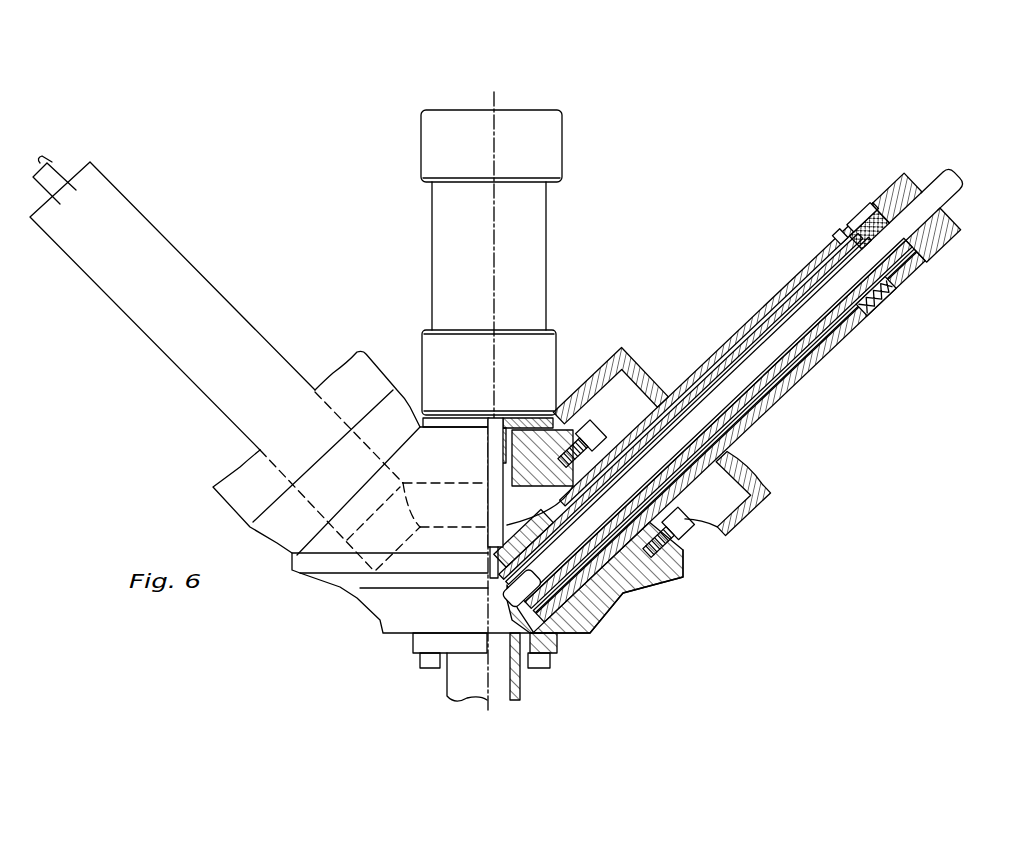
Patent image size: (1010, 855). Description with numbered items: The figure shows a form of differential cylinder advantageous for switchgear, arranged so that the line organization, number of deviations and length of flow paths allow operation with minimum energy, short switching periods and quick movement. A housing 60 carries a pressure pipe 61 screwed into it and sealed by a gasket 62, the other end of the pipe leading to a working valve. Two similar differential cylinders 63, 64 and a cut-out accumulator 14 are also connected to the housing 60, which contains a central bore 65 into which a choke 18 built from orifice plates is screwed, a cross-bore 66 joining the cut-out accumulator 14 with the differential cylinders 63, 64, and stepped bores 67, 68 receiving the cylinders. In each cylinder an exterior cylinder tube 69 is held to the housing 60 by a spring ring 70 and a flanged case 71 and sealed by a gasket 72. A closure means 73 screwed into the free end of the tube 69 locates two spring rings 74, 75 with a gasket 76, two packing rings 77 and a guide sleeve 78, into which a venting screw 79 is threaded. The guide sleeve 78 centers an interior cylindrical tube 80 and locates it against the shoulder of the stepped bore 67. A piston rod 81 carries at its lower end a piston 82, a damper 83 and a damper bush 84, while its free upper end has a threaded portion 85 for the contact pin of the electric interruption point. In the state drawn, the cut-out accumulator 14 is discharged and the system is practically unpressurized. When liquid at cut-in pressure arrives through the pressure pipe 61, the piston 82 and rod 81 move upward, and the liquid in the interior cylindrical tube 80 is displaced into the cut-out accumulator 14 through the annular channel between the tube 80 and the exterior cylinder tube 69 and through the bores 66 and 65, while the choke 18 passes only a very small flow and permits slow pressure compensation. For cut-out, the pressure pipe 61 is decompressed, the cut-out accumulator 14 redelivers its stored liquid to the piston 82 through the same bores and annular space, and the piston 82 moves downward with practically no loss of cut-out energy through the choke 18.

The cut-out accumulator 14 is at (433, 292).
The choke 18 is at (490, 565).
The housing 60 is at (600, 622).
The pressure pipe 61 is at (520, 683).
The gasket 62 is at (548, 650).
The differential cylinder 63 is at (686, 380).
The differential cylinder 64 is at (227, 297).
The central bore 65 is at (493, 437).
The cross-bore 66 is at (490, 560).
The stepped bore 67 is at (663, 580).
The stepped bore 68 is at (483, 585).
The exterior cylinder tube 69 is at (785, 395).
The spring ring 70 is at (693, 547).
The flanged case 71 is at (755, 505).
The gasket 72 is at (680, 528).
The closure means 73 is at (867, 218).
The spring ring 74 is at (900, 292).
The spring ring 75 is at (880, 305).
The gasket 76 is at (838, 238).
The packing rings 77 is at (820, 233).
The guide sleeve 78 is at (783, 292).
The venting screw 79 is at (803, 260).
The interior cylindrical tube 80 is at (743, 327).
The piston rod 81 is at (636, 487).
The piston 82 is at (623, 587).
The damper 83 is at (590, 610).
The damper bush 84 is at (673, 560).
The threaded portion 85 is at (952, 197).